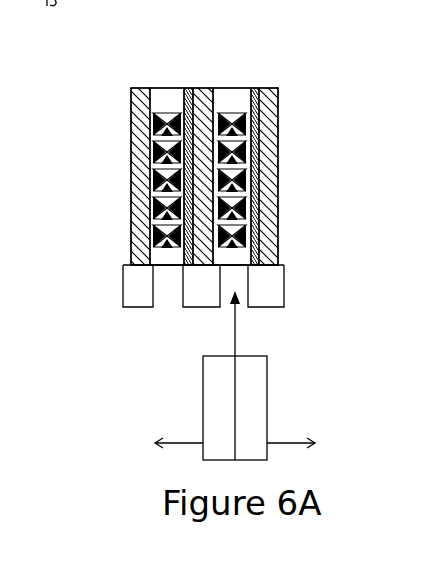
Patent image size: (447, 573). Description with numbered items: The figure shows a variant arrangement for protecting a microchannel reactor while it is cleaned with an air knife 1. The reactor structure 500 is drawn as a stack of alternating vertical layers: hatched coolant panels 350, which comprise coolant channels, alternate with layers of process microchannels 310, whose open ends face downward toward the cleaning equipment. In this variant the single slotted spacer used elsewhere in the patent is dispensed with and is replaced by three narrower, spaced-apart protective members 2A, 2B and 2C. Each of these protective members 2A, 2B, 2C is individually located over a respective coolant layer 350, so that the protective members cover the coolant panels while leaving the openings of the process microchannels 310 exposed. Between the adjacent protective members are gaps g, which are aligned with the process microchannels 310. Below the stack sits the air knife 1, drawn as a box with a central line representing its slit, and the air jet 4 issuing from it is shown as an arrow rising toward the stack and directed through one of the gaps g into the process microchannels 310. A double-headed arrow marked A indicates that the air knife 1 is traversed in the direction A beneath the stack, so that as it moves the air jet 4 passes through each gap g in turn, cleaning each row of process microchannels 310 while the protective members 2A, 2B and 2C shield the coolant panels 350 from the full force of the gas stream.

The reactor stack 500 is at (131, 182).
The coolant panel 350 is at (135, 88).
The process microchannel 310 is at (157, 103).
The protective member 2A is at (123, 275).
The protective member 2B is at (200, 307).
The protective member 2C is at (278, 305).
The gap g is at (183, 295).
The air jet 4 is at (235, 330).
The air knife 1 is at (203, 400).
The traverse direction A is at (185, 443).